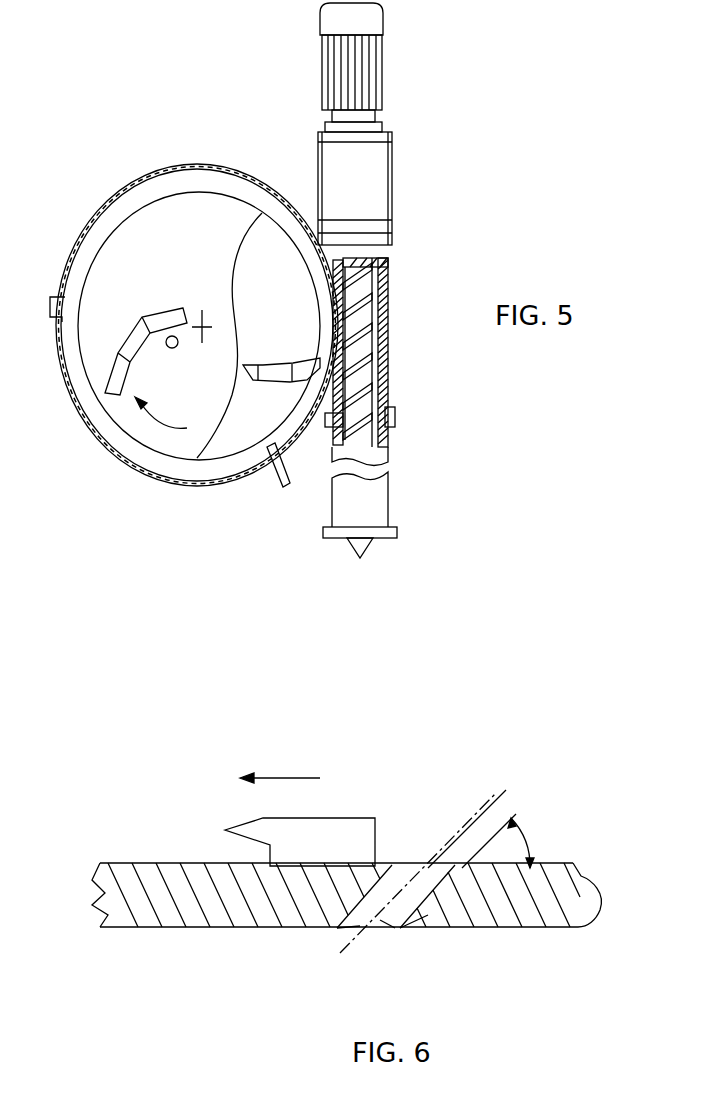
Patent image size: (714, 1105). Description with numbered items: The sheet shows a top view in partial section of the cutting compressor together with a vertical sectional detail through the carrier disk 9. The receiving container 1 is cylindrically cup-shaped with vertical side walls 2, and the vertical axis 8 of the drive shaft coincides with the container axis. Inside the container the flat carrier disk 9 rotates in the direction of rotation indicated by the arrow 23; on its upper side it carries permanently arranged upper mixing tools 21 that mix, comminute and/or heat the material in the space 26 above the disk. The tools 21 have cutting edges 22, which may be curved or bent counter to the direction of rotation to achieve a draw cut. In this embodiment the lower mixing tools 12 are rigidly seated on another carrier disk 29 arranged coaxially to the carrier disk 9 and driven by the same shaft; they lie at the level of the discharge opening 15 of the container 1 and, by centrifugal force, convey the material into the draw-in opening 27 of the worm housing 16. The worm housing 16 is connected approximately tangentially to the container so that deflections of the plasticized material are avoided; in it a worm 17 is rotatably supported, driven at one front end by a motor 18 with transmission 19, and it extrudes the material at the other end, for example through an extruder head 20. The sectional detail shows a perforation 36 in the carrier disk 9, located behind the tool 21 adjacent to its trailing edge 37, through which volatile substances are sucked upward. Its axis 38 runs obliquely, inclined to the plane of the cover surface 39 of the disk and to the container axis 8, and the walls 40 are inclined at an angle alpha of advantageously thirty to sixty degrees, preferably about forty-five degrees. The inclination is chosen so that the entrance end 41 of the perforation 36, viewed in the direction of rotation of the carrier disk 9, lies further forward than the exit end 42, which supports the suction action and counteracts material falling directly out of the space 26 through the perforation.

In FIG. 5, the receiving container 1 is at (93, 215).
In FIG. 5, the side walls 2 is at (228, 173).
In FIG. 5, the vertical axis 8 is at (197, 317).
In FIG. 5, the carrier disk 9 is at (165, 230).
In FIG. 6, the carrier disk 9 is at (175, 897).
In FIG. 5, the lower mixing tools 12 is at (282, 377).
In FIG. 5, the discharge opening 15 is at (377, 363).
In FIG. 5, the worm housing 16 is at (383, 302).
In FIG. 5, the worm 17 is at (362, 340).
In FIG. 5, the motor 18 is at (355, 83).
In FIG. 5, the transmission 19 is at (353, 197).
In FIG. 5, the extruder head 20 is at (397, 535).
In FIG. 5, the upper mixing tools 21 is at (138, 338).
In FIG. 6, the upper mixing tools 21 is at (343, 819).
In FIG. 5, the cutting edges 22 is at (103, 370).
In FIG. 5, the direction of rotation (arrow) 23 is at (153, 420).
In FIG. 6, the direction of rotation (arrow) 23 is at (293, 778).
In FIG. 6, the space above carrier disk 26 is at (377, 918).
In FIG. 5, the draw-in opening 27 is at (385, 272).
In FIG. 5, the another carrier disk 29 is at (232, 427).
In FIG. 5, the perforations 36 is at (178, 347).
In FIG. 6, the perforations 36 is at (397, 883).
In FIG. 5, the trailing edges 37 is at (140, 345).
In FIG. 6, the perforation axes 38 is at (470, 820).
In FIG. 6, the cover surface 39 is at (162, 863).
In FIG. 6, the perforation walls 40 is at (337, 930).
In FIG. 6, the entrance end 41 is at (395, 932).
In FIG. 6, the exit end 42 is at (505, 808).